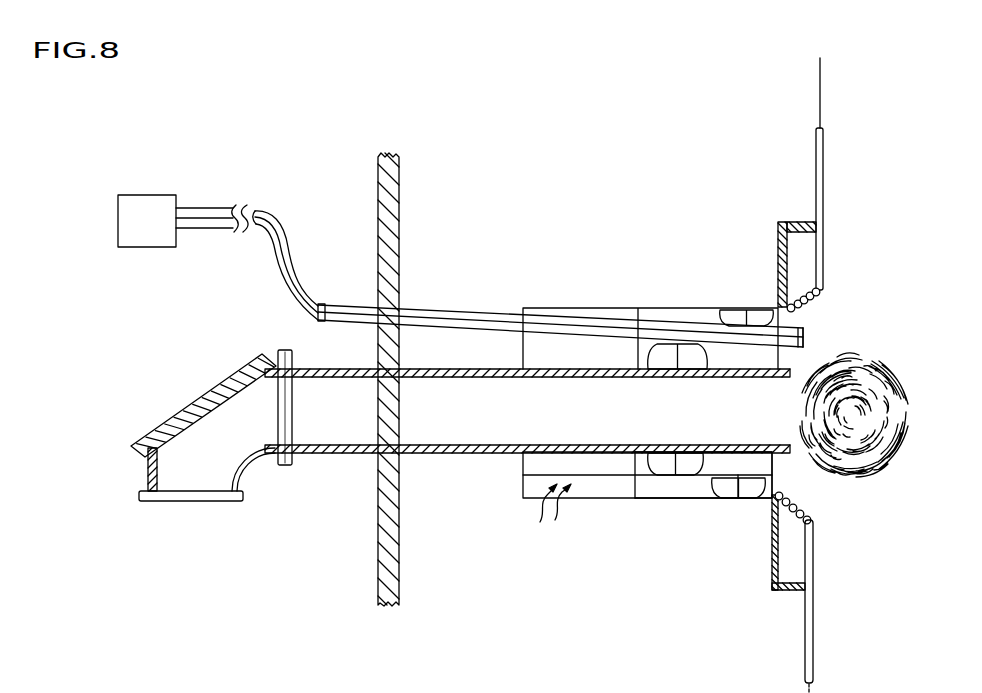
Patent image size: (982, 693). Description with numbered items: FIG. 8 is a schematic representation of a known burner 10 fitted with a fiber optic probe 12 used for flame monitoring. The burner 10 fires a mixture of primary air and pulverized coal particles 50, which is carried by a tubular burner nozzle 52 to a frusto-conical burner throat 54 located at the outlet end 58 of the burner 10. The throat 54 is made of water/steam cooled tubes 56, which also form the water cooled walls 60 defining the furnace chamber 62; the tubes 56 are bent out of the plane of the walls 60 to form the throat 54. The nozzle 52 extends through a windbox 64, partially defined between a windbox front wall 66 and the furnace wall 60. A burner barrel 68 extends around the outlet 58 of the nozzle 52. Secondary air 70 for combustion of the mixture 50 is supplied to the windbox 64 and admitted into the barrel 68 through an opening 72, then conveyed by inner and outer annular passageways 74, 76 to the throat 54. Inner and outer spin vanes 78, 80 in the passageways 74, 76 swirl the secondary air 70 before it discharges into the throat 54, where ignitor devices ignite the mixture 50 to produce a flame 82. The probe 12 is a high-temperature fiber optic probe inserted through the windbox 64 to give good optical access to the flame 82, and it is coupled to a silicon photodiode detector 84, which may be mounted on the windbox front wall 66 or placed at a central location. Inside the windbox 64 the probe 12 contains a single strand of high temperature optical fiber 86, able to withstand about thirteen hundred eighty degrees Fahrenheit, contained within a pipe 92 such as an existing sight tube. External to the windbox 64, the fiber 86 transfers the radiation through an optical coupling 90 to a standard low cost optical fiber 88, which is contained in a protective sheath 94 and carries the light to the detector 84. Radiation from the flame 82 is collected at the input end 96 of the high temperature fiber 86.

The burner 10 is at (538, 152).
The probe 12 is at (512, 313).
The PA/PC mixture 50 is at (376, 412).
The tubular burner nozzle 52 is at (416, 453).
The burner throat 54 is at (796, 484).
The water/steam cooled tubes 56 is at (778, 540).
The outlet end 58 is at (771, 410).
The water cooled walls 60 is at (808, 618).
The furnace chamber 62 is at (859, 582).
The windbox 64 is at (595, 200).
The windbox front wall 66 is at (399, 562).
The burner barrel 68 is at (640, 308).
The secondary air 70 is at (546, 532).
The opening 72 is at (581, 366).
The inner annular passageway 74 is at (712, 468).
The outer annular passageway 76 is at (697, 308).
The inner spin vanes 78 is at (661, 472).
The outer spin vanes 80 is at (750, 499).
The flame 82 is at (896, 424).
The silicon photodiode detector 84 is at (158, 232).
The high temperature optical fiber 86 is at (410, 306).
The standard optical fiber 88 is at (283, 239).
The optical coupling 90 is at (323, 304).
The pipe 92 is at (467, 308).
The protective sheath 94 is at (266, 233).
The input end 96 is at (805, 328).